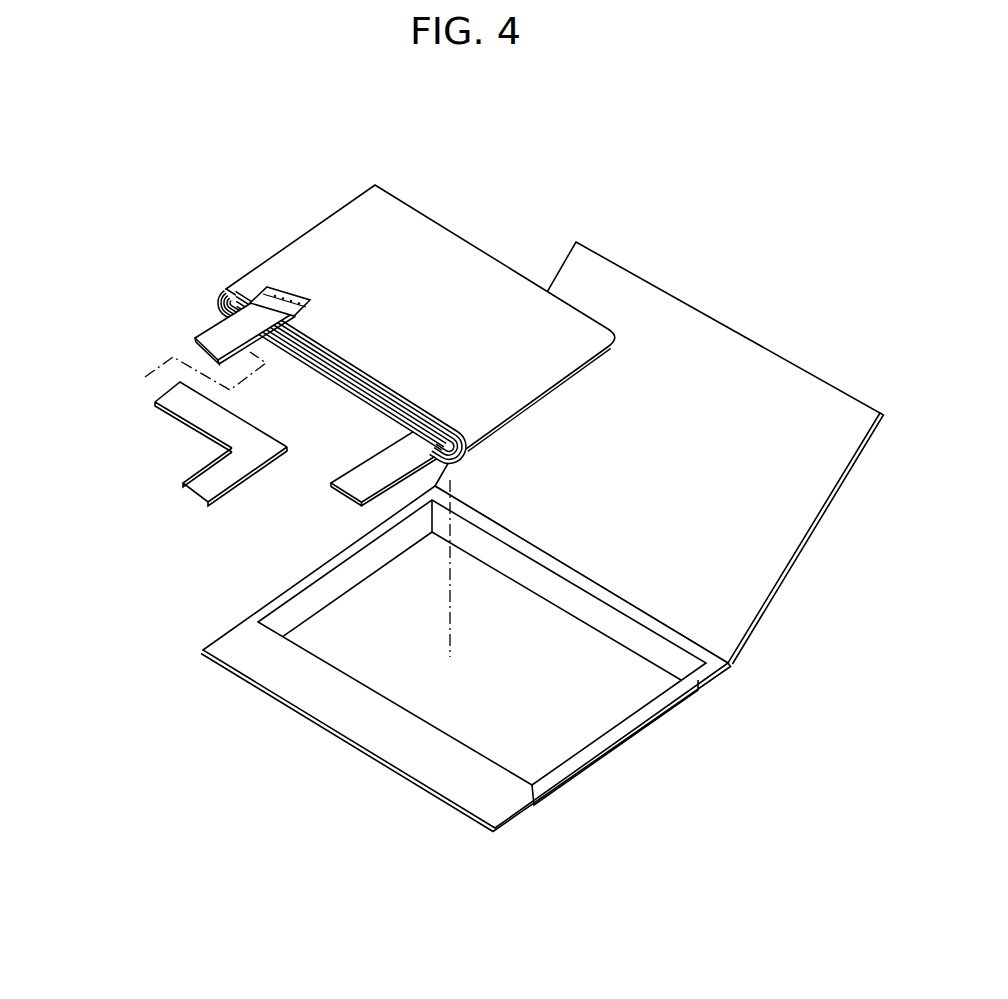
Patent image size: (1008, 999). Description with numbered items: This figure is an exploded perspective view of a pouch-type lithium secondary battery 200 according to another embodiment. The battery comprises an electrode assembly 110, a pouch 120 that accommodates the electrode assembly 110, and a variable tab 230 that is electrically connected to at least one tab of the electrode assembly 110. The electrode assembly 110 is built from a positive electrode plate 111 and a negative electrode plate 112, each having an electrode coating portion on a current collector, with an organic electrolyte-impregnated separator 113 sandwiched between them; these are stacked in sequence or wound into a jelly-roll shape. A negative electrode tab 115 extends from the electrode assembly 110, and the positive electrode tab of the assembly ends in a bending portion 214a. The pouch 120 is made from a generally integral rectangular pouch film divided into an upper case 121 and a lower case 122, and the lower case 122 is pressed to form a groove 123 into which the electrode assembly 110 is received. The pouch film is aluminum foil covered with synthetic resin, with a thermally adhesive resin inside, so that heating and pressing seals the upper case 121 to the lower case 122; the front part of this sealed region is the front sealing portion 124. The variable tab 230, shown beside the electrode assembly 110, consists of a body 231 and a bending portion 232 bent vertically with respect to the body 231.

The pouch-type lithium secondary battery 200 is at (472, 146).
The electrode assembly 110 is at (300, 231).
The positive electrode plate 111 is at (367, 373).
The negative electrode plate 112 is at (420, 409).
The separator 113 is at (395, 389).
The negative electrode tab 115 is at (353, 483).
The pouch 120 is at (826, 686).
The upper case 121 is at (735, 624).
The lower case 122 is at (628, 740).
The groove 123 is at (636, 702).
The front sealing portion 124 is at (372, 740).
The bending portion 214a is at (210, 333).
The variable tab 230 is at (125, 520).
The body 231 is at (205, 483).
The bending portion 232 is at (200, 415).